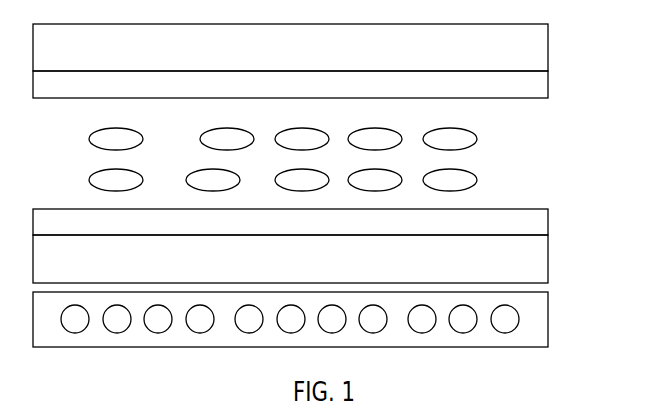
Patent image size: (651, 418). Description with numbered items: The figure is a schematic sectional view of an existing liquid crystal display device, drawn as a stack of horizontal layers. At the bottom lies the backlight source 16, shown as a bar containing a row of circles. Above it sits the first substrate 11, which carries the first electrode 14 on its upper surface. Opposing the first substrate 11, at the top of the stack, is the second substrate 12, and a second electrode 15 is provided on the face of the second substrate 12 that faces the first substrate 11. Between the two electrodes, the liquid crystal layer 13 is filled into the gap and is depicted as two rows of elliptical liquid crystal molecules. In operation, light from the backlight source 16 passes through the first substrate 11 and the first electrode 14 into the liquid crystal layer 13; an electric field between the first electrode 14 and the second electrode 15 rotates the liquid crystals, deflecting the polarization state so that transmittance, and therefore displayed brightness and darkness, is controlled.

The first substrate 11 is at (549, 258).
The second substrate 12 is at (549, 45).
The liquid crystal layer 13 is at (478, 153).
The first electrode 14 is at (549, 222).
The second electrode 15 is at (549, 82).
The backlight source 16 is at (549, 318).